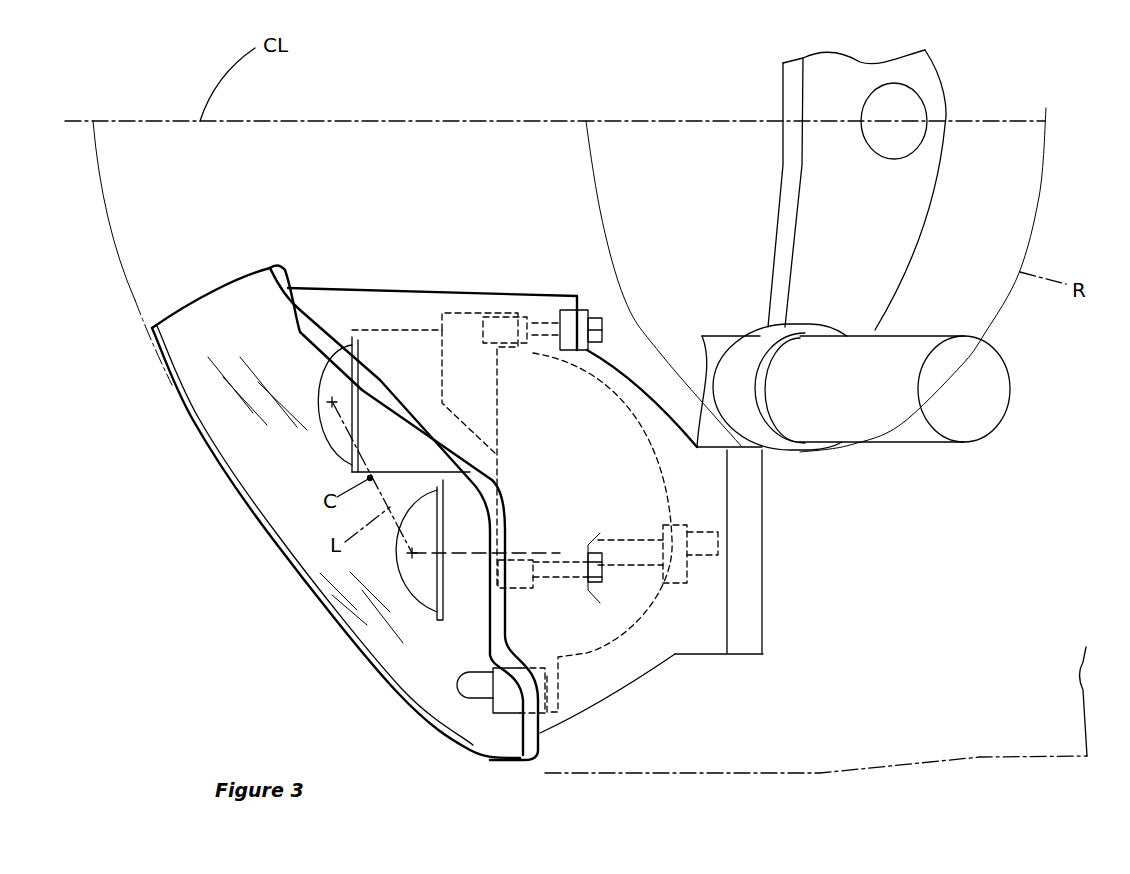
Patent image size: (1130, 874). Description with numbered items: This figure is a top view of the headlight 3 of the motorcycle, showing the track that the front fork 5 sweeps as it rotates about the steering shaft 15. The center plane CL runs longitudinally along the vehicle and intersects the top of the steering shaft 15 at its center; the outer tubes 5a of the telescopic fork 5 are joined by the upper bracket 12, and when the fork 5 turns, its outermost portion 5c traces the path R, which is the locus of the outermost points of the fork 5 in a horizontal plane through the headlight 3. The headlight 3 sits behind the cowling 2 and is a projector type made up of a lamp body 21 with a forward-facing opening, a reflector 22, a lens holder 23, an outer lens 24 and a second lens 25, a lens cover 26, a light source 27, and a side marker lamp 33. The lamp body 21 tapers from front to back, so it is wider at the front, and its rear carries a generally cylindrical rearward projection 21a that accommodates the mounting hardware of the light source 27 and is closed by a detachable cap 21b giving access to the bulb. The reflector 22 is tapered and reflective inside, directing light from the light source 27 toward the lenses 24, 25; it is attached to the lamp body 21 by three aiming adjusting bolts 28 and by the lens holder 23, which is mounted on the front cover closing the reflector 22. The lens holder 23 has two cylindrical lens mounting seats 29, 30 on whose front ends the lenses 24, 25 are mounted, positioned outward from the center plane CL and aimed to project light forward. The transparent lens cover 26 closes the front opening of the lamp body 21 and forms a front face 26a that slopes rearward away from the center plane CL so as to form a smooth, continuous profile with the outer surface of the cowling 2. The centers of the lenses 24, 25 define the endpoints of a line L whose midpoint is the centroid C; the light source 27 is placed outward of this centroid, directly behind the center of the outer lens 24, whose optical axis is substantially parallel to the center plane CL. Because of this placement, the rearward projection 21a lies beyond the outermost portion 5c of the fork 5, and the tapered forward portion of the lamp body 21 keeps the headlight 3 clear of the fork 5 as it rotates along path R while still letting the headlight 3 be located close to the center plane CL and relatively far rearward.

The cowling 2 is at (126, 290).
The headlight 3 is at (429, 278).
The front fork 5 is at (925, 447).
The outer tube 5a is at (995, 412).
The outermost portion of the front fork 5c is at (815, 445).
The upper bracket 12 is at (924, 208).
The steering shaft 15 is at (912, 108).
The lamp body 21 is at (633, 687).
The rearward projection 21a is at (713, 654).
The detachable cap 21b is at (750, 655).
The reflector 22 is at (613, 413).
The lens holder 23 is at (507, 717).
The outer lens 24 is at (403, 592).
The lens 25 is at (320, 415).
The lens cover 26 is at (297, 520).
The front face 26a is at (232, 500).
The light source 27 is at (667, 597).
The aiming adjusting bolt 28 is at (593, 310).
The lens mounting seat 29 is at (440, 647).
The lens mounting seat 30 is at (383, 330).
The side marker lamp 33 is at (468, 700).